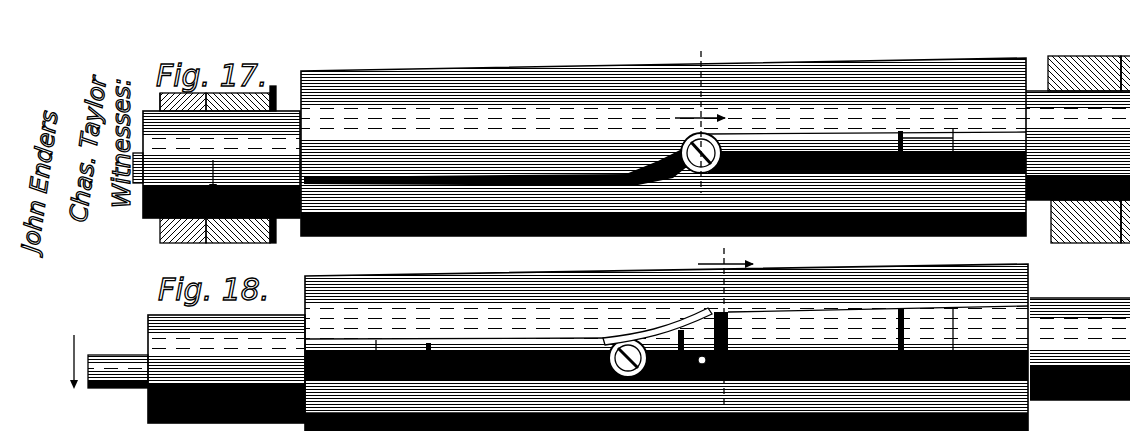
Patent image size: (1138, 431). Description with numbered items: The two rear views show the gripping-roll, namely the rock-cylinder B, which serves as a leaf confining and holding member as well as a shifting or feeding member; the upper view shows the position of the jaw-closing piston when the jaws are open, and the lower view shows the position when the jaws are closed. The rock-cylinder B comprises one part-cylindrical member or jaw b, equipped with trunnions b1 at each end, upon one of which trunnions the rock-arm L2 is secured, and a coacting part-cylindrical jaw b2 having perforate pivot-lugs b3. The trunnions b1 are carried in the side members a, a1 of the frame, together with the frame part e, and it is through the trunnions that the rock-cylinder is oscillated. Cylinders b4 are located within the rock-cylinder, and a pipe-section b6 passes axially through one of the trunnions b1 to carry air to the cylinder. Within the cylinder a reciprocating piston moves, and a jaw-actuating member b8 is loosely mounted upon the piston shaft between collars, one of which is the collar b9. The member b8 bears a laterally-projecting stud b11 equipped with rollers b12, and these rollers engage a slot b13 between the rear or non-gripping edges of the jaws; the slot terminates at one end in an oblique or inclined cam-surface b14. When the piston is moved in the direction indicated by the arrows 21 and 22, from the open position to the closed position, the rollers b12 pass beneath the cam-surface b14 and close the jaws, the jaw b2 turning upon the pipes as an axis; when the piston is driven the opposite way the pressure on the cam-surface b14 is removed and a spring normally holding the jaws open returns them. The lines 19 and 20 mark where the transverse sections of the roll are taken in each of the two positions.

In FIG. 17, the rock-cylinder B is at (663, 147).
In FIG. 18, the rock-cylinder B is at (666, 347).
In FIG. 17, the part-cylindrical member or jaw b is at (867, 181).
In FIG. 18, the part-cylindrical member or jaw b is at (666, 400).
In FIG. 17, the trunnions b1 is at (631, 154).
In FIG. 18, the trunnions b1 is at (639, 360).
In FIG. 17, the coacting part-cylindrical jaw b2 is at (900, 112).
In FIG. 18, the coacting part-cylindrical jaw b2 is at (727, 328).
In FIG. 17, the perforate pivot-lugs b3 is at (928, 136).
In FIG. 18, the perforate pivot-lugs b3 is at (380, 350).
In FIG. 17, the cylinders b4 is at (851, 140).
In FIG. 18, the cylinders b4 is at (460, 347).
In FIG. 18, the pipe-section b6 is at (103, 350).
In FIG. 18, the jaw-actuating member b8 is at (668, 394).
In FIG. 18, the collar b9 is at (706, 332).
In FIG. 17, the laterally-projecting stud b11 is at (706, 140).
In FIG. 18, the laterally-projecting stud b11 is at (621, 348).
In FIG. 17, the rollers b12 is at (673, 133).
In FIG. 18, the rollers b12 is at (611, 340).
In FIG. 17, the slot b13 is at (792, 150).
In FIG. 18, the slot b13 is at (812, 326).
In FIG. 17, the oblique or inclined cam-surface b14 is at (638, 153).
In FIG. 18, the oblique or inclined cam-surface b14 is at (668, 326).
In FIG. 17, the rock-arm L2 is at (162, 190).
In FIG. 17, the side member a1 is at (262, 230).
In FIG. 17, the side member a is at (1089, 166).
In FIG. 17, the frame e is at (1120, 230).
In FIG. 17, the section line 19 is at (203, 176).
In FIG. 18, the section line 20 is at (76, 357).
In FIG. 17, the section line 21 is at (700, 107).
In FIG. 18, the section line 22 is at (726, 253).